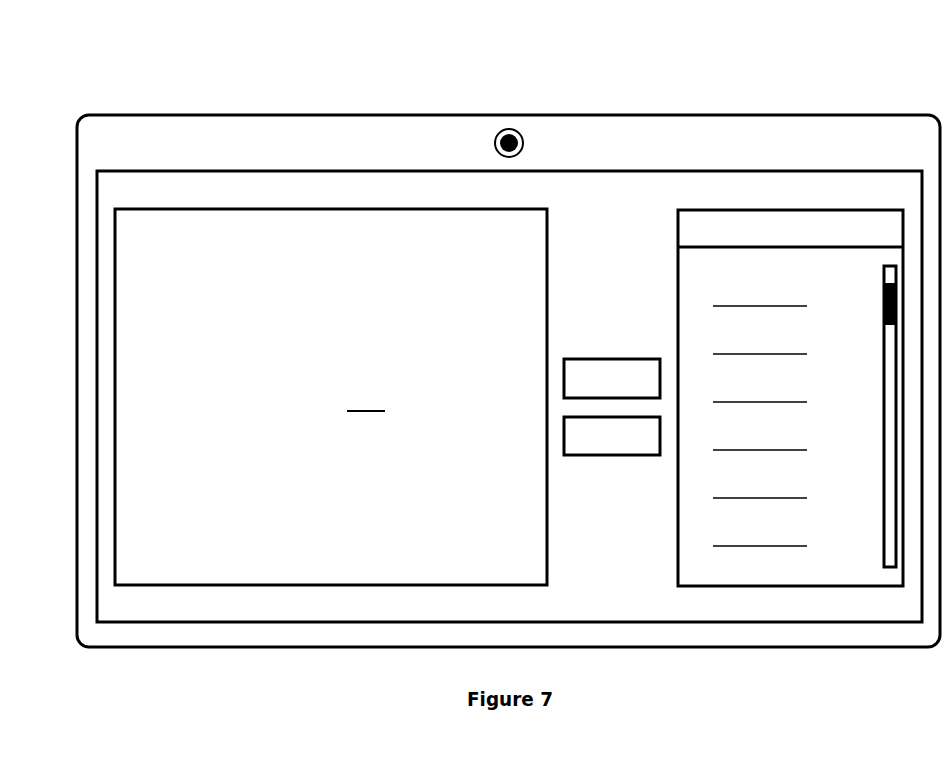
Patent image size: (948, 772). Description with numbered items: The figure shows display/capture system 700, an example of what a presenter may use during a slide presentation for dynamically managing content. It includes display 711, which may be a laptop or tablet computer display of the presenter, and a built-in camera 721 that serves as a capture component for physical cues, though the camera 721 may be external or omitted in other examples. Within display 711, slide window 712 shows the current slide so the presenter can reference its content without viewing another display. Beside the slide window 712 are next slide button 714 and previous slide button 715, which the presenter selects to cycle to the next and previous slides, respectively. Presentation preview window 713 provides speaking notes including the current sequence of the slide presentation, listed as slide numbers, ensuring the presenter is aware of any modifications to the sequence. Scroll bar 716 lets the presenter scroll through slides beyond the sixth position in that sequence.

The display/capture system 700 is at (55, 79).
The display 711 is at (255, 167).
The slide window 712 is at (554, 234).
The presentation preview window 713 is at (672, 310).
The next slide button 714 is at (625, 354).
The previous slide button 715 is at (627, 458).
The scroll bar 716 is at (878, 516).
The camera 721 is at (490, 142).